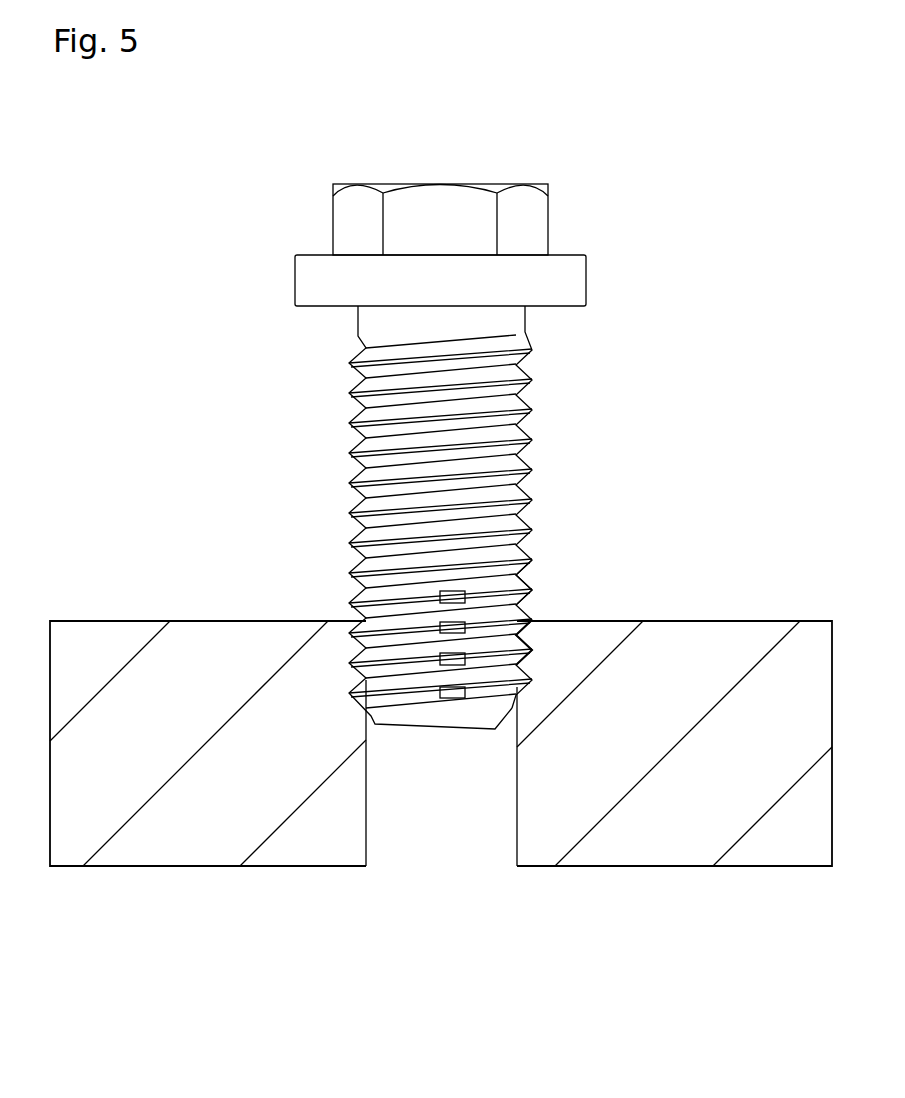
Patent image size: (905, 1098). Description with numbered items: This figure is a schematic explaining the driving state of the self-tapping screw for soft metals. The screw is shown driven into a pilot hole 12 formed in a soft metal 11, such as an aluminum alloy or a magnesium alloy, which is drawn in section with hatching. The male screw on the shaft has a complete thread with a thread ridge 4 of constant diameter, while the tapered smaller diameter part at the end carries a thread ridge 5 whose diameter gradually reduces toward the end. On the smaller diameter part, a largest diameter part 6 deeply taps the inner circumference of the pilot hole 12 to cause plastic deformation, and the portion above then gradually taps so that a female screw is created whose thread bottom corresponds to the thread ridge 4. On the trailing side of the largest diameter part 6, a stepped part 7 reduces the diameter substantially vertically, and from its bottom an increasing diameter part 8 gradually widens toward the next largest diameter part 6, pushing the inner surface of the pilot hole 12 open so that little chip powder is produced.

The thread ridge 4 is at (533, 438).
The thread ridge 5 is at (537, 648).
The largest diameter part 6 is at (533, 587).
The stepped part 7 is at (440, 598).
The increasing diameter part 8 is at (467, 593).
The soft metal 11 is at (723, 637).
The pilot hole 12 is at (452, 835).